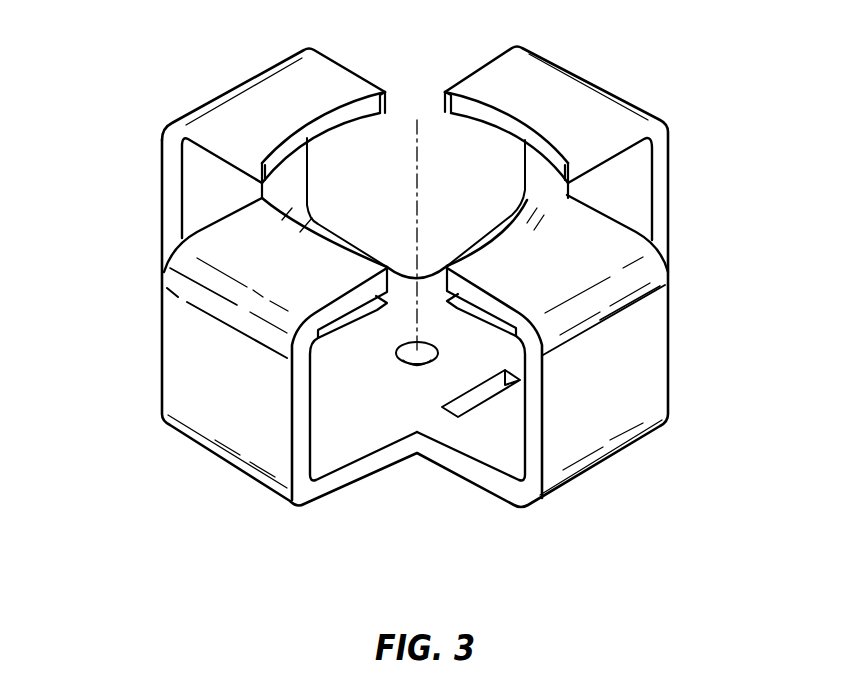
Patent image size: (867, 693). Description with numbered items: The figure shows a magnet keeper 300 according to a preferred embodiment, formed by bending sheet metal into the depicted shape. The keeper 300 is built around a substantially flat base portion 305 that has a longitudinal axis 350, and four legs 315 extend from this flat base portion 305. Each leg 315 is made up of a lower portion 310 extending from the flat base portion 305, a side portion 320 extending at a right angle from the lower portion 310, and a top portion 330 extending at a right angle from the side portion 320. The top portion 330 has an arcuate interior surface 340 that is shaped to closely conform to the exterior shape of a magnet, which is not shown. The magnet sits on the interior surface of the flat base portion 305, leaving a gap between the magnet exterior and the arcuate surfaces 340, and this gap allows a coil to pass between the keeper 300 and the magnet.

The keeper 300 is at (731, 56).
The flat base portion 305 is at (399, 292).
The lower portion 310 is at (352, 430).
The leg 315 is at (139, 391).
The side portion 320 is at (645, 380).
The top portion 330 is at (278, 90).
The arcuate interior surface 340 is at (390, 110).
The longitudinal axis 350 is at (418, 173).